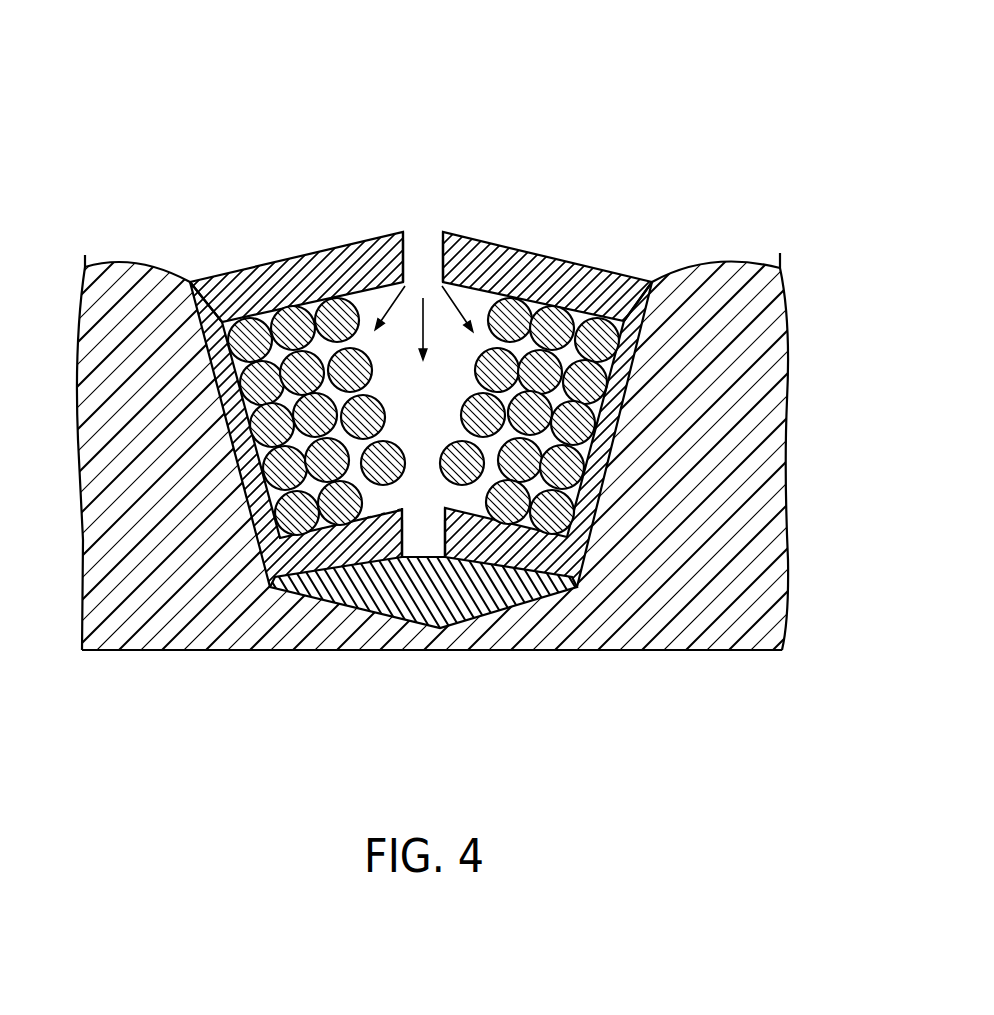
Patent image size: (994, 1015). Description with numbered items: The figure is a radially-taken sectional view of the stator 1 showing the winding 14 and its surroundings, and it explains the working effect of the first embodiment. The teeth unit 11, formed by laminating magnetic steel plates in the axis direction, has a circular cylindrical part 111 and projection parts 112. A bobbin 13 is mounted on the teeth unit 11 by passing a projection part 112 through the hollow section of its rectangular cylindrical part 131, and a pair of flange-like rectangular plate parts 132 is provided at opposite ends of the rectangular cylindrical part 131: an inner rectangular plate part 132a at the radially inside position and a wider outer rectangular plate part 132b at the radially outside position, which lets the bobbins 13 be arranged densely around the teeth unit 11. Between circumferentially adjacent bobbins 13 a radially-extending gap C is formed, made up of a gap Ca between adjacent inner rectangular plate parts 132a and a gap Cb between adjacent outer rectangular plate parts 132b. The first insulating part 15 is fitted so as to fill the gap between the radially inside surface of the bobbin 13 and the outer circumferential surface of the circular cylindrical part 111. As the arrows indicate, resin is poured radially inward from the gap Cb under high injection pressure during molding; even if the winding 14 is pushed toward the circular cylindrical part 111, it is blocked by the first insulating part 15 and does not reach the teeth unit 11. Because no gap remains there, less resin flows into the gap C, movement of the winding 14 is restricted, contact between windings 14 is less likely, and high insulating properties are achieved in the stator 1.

The stator 1 is at (497, 357).
The teeth unit 11 is at (497, 386).
The circular cylindrical part 111 is at (673, 630).
The projection part 112 is at (432, 240).
The bobbin 13 is at (497, 395).
The rectangular cylindrical part 131 is at (233, 432).
The rectangular plate part 132 is at (421, 446).
The inner rectangular plate part 132a is at (307, 573).
The outer rectangular plate part 132b is at (322, 273).
The winding 14 is at (250, 328).
The first insulating part 15 is at (432, 547).
The gap C is at (438, 423).
The gap Ca is at (457, 600).
The gap Cb is at (436, 246).